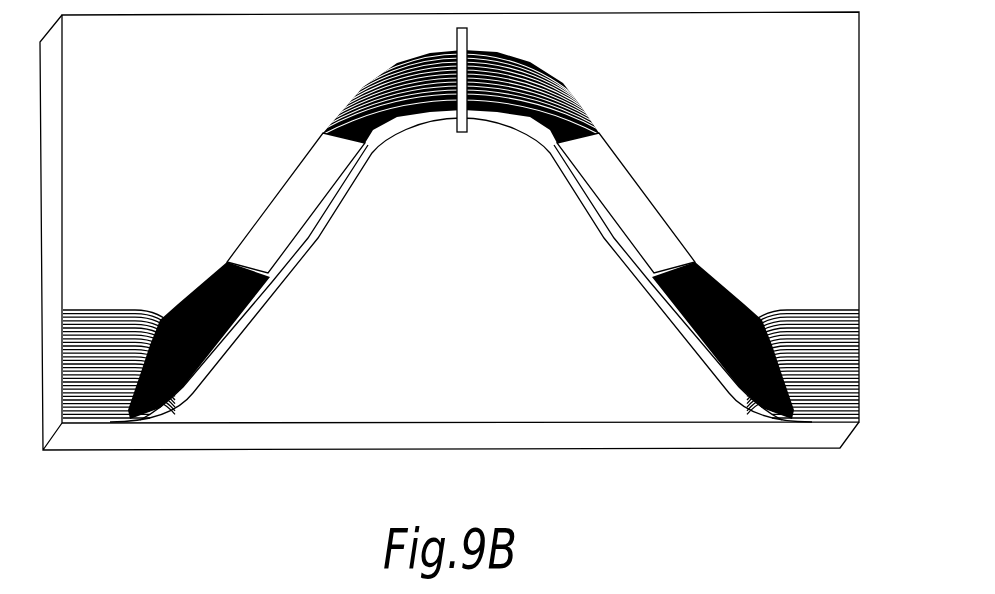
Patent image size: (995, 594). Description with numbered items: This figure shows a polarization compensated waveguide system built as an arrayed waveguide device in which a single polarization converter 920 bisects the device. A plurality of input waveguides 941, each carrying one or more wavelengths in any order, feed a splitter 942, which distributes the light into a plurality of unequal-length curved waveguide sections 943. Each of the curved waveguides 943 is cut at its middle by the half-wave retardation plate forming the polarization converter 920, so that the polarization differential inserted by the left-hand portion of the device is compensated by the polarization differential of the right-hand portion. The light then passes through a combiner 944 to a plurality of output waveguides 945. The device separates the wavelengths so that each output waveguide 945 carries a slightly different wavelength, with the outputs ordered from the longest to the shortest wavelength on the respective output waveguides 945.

The polarization converter 920 is at (462, 132).
The input waveguides 941 is at (163, 310).
The splitter 942 is at (295, 192).
The curved waveguide sections 943 is at (557, 78).
The combiner 944 is at (627, 188).
The output waveguides 945 is at (760, 307).